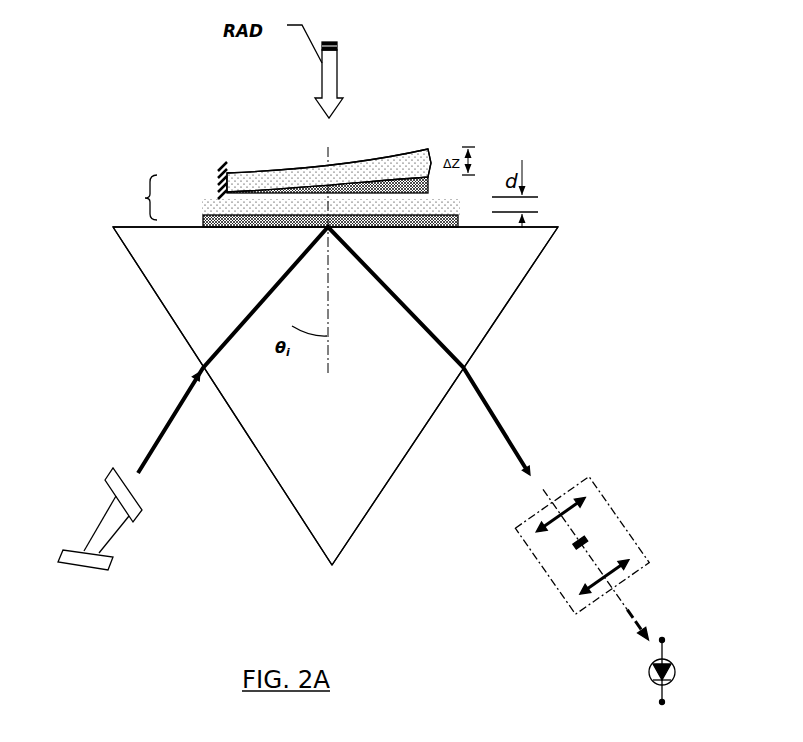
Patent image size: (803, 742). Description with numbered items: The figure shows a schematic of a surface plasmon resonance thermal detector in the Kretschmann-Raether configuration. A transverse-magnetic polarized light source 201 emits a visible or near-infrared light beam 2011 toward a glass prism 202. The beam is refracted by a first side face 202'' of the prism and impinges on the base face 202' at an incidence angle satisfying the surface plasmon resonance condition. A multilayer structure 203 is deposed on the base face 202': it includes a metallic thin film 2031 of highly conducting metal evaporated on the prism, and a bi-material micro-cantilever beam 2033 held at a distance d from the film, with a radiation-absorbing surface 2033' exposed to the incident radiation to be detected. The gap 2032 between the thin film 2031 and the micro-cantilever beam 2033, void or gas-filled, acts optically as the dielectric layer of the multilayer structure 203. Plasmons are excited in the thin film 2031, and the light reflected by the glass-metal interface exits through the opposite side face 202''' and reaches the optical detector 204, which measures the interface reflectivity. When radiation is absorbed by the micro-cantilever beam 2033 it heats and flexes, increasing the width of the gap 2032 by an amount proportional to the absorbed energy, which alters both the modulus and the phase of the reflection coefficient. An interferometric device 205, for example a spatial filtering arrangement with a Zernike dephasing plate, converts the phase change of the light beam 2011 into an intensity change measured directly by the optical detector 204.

The transverse-magnetic polarized light source 201 is at (97, 535).
The light beam 2011 is at (334, 356).
The glass prism 202 is at (335, 402).
The base face 202' is at (377, 226).
The first side face 202'' is at (174, 396).
The opposite side face 202''' is at (445, 396).
The multilayer structure 203 is at (137, 200).
The metallic thin film 2031 is at (202, 220).
The gap 2032 is at (247, 207).
The bi-material micro-cantilever beam 2033 is at (373, 145).
The radiation-absorbing surface 2033' is at (354, 133).
The optical detector 204 is at (678, 670).
The interferometric device 205 is at (603, 520).